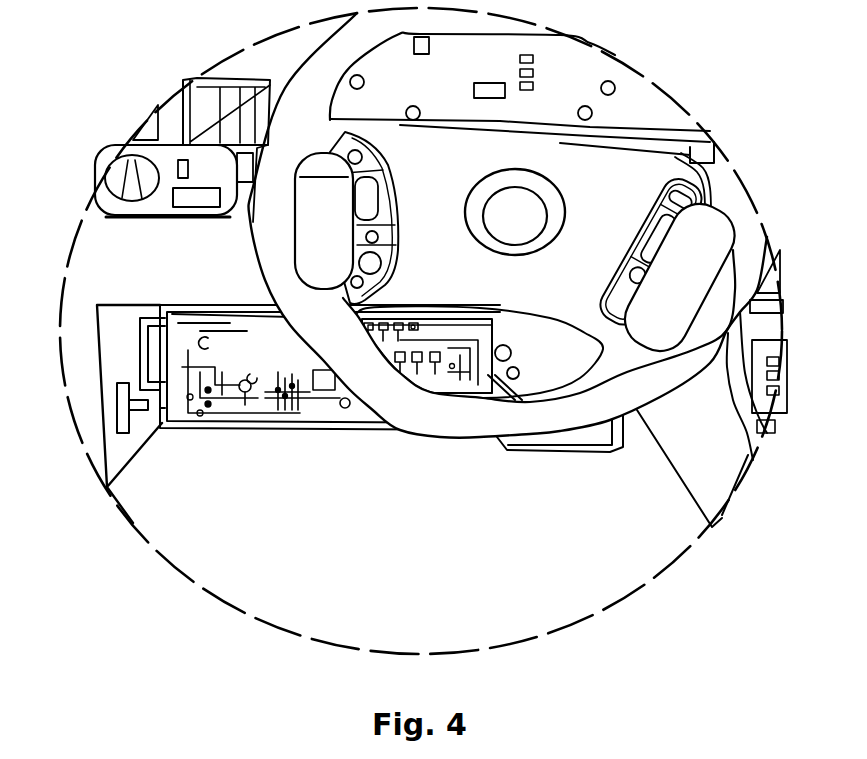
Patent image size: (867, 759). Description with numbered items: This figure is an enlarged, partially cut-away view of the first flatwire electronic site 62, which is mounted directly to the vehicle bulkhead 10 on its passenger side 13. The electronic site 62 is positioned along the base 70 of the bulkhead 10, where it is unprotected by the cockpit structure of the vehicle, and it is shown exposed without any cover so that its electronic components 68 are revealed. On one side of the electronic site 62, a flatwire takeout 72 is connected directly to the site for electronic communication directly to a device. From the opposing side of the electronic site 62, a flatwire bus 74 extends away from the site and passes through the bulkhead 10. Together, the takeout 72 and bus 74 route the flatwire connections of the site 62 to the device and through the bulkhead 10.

The vehicle bulkhead 10 is at (122, 318).
The passenger side 13 is at (117, 338).
The first flatwire electronic site 62 is at (316, 450).
The electronic components 68 is at (337, 320).
The base 70 is at (228, 432).
The flatwire takeout 72 is at (130, 400).
The flatwire bus 74 is at (553, 445).